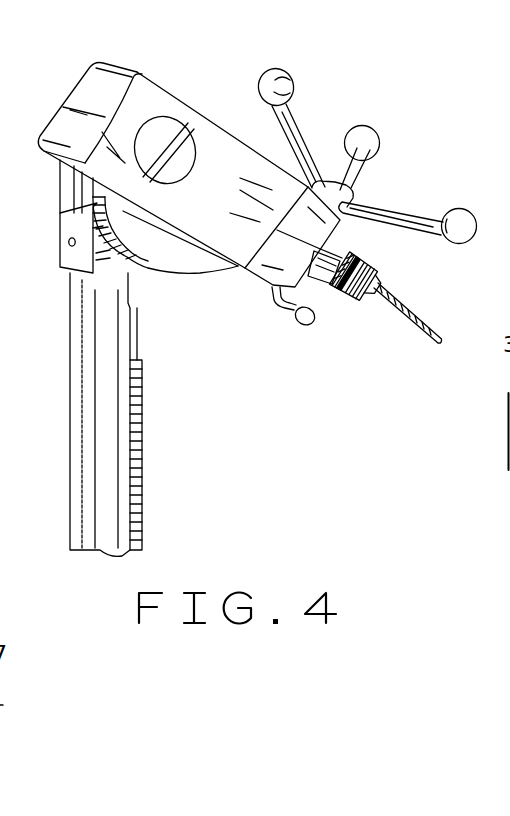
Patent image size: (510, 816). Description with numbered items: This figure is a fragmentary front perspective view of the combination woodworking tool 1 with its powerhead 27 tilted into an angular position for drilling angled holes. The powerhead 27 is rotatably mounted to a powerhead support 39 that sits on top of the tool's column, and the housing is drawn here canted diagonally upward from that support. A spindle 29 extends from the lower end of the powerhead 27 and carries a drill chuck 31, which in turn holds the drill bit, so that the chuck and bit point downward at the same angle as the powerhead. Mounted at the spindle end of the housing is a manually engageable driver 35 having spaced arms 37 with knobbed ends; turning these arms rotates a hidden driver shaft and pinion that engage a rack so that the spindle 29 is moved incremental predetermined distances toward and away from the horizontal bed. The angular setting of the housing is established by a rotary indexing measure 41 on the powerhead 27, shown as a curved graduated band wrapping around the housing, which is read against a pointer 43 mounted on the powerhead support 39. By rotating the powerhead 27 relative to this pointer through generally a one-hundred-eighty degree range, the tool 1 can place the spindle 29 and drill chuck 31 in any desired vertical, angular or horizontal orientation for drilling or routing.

The combination woodworking tool 1 is at (213, 54).
The powerhead 27 is at (166, 68).
The spindle 29 is at (352, 253).
The drill chuck 31 is at (374, 274).
The driver 35 is at (345, 188).
The spaced arms 37 is at (284, 78).
The powerhead support 39 is at (72, 199).
The rotary indexing measure 41 is at (123, 252).
The pointer 43 is at (97, 206).